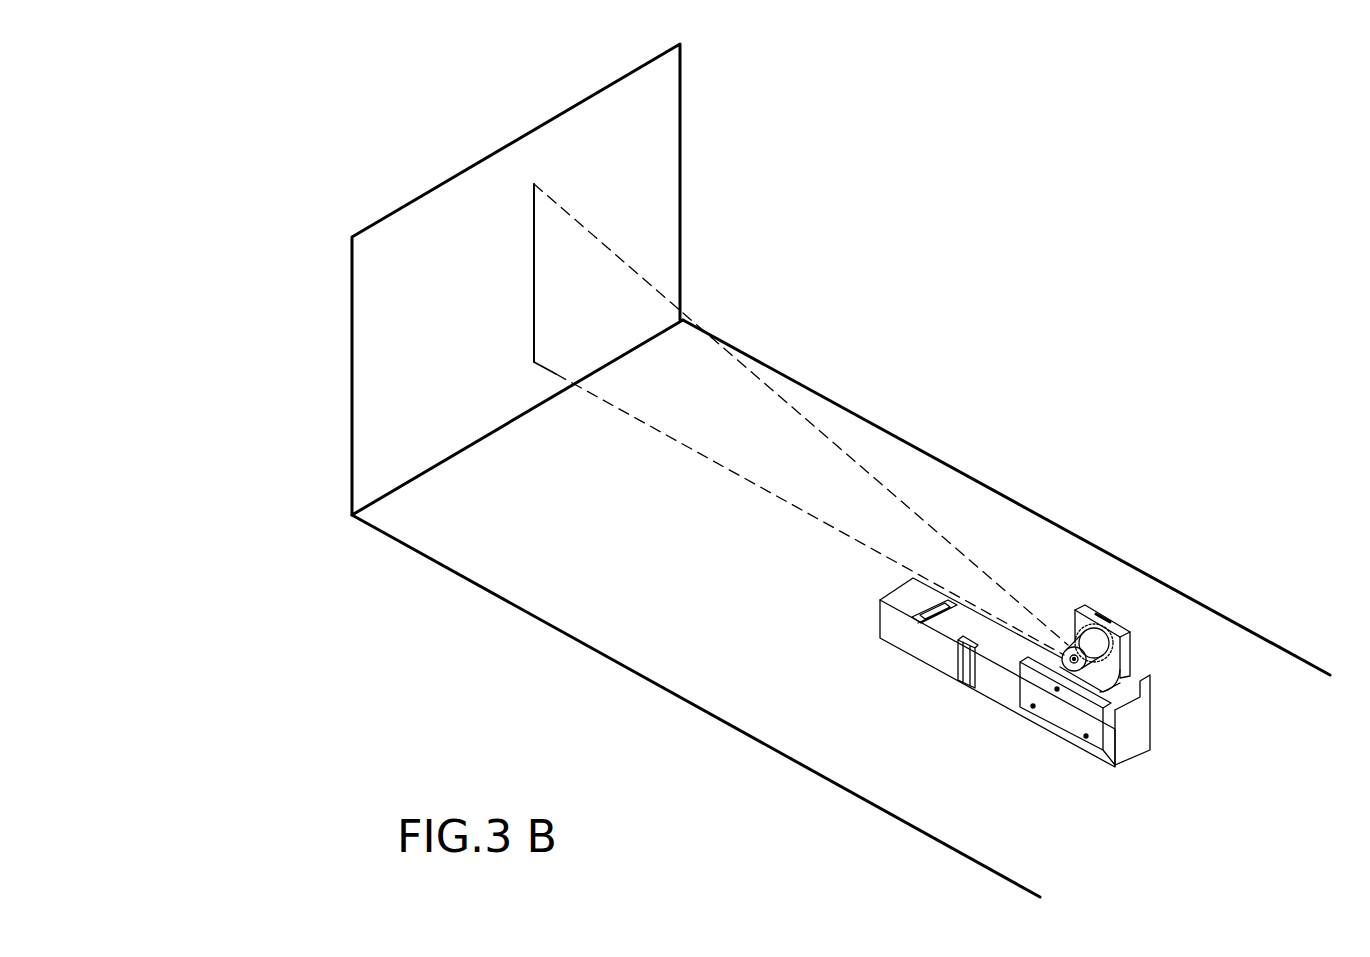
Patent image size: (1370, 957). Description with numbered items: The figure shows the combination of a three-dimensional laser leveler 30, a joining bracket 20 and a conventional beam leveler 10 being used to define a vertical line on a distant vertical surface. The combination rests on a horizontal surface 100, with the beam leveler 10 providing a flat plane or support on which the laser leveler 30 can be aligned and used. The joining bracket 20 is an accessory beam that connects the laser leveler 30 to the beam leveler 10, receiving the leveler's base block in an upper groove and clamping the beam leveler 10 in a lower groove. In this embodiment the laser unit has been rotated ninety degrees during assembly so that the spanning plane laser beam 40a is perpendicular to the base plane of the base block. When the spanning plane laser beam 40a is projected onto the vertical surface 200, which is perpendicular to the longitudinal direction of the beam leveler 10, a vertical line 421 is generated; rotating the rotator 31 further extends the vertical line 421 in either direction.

The beam leveler 10 is at (923, 650).
The joining bracket 20 is at (1060, 717).
The 3D laser leveler 30 is at (1131, 648).
The rotator 31 is at (1073, 637).
The spanning plane laser beam 40a is at (745, 376).
The horizontal surface 100 is at (552, 608).
The vertical surface 200 is at (387, 311).
The vertical line 421 is at (534, 285).